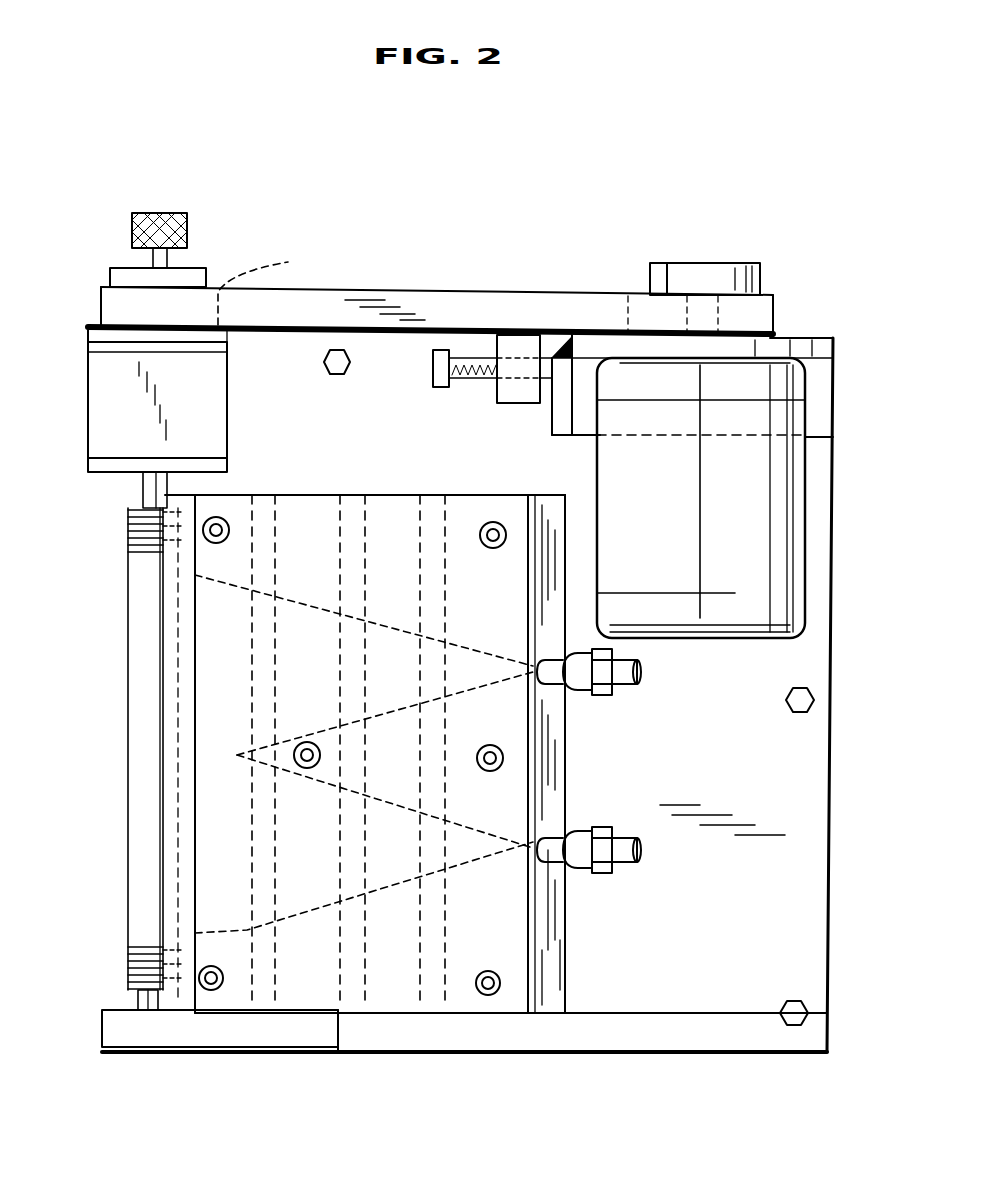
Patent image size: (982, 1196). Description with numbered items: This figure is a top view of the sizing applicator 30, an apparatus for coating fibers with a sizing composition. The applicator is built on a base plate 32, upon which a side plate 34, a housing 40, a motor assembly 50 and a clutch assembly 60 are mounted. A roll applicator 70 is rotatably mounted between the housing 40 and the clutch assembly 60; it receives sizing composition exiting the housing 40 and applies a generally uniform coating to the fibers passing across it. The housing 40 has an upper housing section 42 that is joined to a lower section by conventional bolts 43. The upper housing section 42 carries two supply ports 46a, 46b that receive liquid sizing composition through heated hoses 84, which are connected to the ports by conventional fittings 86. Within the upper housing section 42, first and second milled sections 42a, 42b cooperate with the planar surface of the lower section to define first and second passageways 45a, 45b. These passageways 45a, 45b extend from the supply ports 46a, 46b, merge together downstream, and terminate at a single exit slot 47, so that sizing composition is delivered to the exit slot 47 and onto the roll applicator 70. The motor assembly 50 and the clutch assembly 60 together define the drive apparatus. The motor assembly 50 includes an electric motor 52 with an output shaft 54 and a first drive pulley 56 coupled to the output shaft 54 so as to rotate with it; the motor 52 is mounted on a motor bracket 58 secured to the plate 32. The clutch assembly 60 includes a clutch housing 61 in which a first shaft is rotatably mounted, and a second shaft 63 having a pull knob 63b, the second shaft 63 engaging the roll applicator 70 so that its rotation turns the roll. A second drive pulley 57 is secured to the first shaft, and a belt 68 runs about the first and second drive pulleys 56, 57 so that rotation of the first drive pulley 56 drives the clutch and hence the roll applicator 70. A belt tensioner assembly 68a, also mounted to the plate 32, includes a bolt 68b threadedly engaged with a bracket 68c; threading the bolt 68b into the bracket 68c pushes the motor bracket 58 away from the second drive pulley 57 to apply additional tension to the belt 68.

The sizing applicator 30 is at (845, 645).
The base plate 32 is at (793, 798).
The side plate 34 is at (243, 1033).
The housing 40 is at (553, 913).
The upper housing section 42 is at (507, 1002).
The first milled section 42a is at (432, 868).
The second milled section 42b is at (392, 630).
The bolts 43 is at (216, 545).
The first passageway 45a is at (350, 900).
The second passageway 45b is at (305, 600).
The first supply port 46a is at (528, 855).
The second supply port 46b is at (530, 680).
The exit slot 47 is at (160, 908).
The motor assembly 50 is at (850, 410).
The electric motor 52 is at (780, 497).
The output shaft 54 is at (718, 312).
The first drive pulley 56 is at (662, 292).
The second drive pulley 57 is at (273, 287).
The motor bracket 58 is at (833, 348).
The clutch assembly 60 is at (245, 258).
The clutch housing 61 is at (103, 405).
The second shaft 63 is at (147, 258).
The pull knob 63b is at (163, 212).
The belt 68 is at (450, 305).
The belt tensioner assembly 68a is at (522, 320).
The bolt 68b is at (463, 380).
The bracket 68c is at (523, 390).
The roll applicator 70 is at (128, 795).
The heated hoses 84 is at (623, 667).
The fittings 86 is at (585, 680).